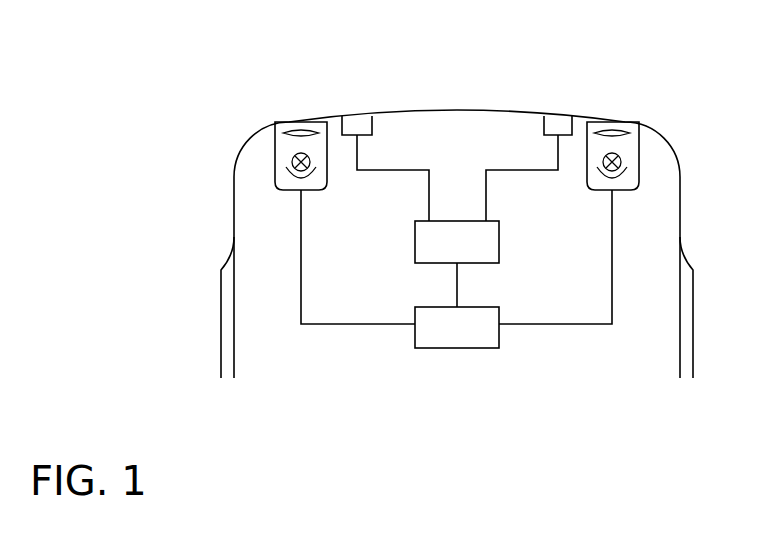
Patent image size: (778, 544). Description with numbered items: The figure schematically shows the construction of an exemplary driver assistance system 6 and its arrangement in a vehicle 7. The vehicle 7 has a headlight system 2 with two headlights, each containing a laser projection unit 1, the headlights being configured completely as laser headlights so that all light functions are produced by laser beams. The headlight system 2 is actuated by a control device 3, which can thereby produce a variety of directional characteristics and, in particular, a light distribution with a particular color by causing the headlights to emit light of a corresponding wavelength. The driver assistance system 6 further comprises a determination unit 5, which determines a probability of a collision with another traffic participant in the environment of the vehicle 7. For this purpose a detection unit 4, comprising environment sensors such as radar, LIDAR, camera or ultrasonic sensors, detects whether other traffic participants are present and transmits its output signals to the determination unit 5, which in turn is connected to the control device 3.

The laser projection unit 1 is at (300, 131).
The headlight system 2 is at (280, 148).
The control device 3 is at (467, 336).
The detection unit 4 is at (357, 124).
The determination unit 5 is at (486, 243).
The driver assistance system 6 is at (586, 335).
The vehicle 7 is at (157, 255).